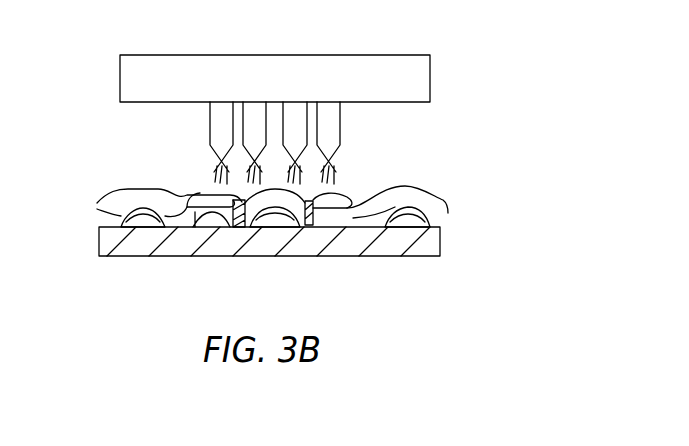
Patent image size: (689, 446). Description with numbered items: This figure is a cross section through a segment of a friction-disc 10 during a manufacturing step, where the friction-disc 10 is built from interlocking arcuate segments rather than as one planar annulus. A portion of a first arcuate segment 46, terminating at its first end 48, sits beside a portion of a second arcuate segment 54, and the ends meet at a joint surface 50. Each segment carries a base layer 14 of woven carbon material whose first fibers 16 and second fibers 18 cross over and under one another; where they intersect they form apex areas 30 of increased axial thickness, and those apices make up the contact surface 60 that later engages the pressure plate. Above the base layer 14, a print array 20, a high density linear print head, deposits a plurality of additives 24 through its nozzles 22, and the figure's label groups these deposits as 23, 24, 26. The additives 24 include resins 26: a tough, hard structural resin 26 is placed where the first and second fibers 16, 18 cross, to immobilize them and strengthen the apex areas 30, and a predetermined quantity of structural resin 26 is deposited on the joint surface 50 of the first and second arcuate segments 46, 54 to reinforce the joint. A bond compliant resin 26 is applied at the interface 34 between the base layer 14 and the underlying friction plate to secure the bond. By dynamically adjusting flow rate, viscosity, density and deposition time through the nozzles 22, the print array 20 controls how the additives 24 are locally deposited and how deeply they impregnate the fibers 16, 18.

The friction-disc 10 is at (448, 42).
The base layer 14 is at (348, 166).
The first fibers 16 is at (141, 220).
The second fibers 18 is at (200, 200).
The print array 20 is at (120, 88).
The nozzles 22 is at (233, 102).
The deposited layer 23 is at (344, 243).
The additives 24 is at (344, 243).
The resins 26 is at (306, 175).
The apex areas 30 is at (197, 193).
The interface 34 is at (112, 219).
The first arcuate segment 46 is at (110, 187).
The first end 48 is at (202, 190).
The joint surface 50 is at (262, 222).
The second arcuate segment 54 is at (445, 192).
The contact surface 60 is at (412, 172).